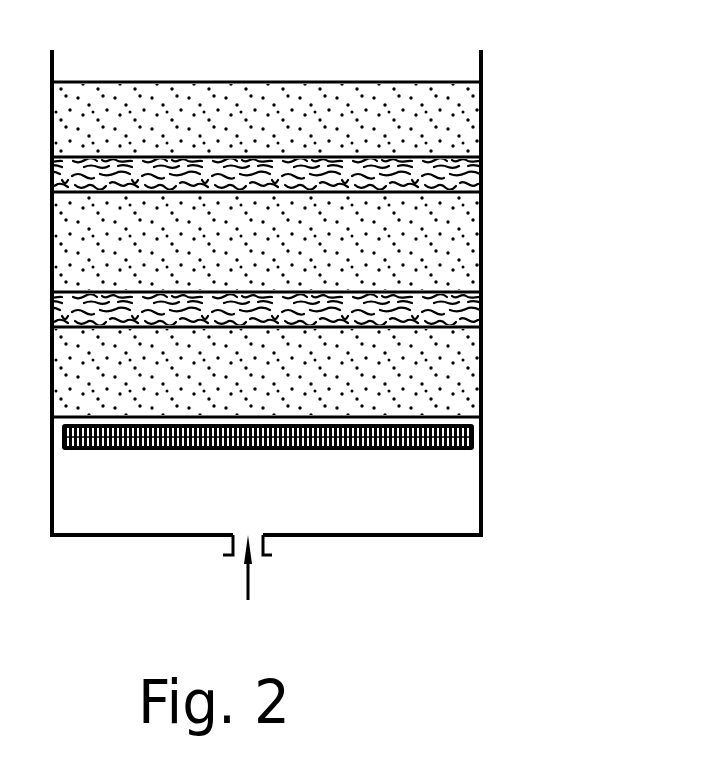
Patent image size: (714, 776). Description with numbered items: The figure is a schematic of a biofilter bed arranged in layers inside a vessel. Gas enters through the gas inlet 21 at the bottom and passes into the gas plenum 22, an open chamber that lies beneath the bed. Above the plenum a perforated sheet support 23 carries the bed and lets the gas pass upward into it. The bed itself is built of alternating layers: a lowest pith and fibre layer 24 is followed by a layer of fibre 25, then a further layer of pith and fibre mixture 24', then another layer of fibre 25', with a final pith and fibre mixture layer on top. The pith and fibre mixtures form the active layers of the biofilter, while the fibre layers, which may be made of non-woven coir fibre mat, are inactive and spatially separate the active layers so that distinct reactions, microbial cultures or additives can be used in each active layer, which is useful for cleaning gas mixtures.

The gas inlet 21 is at (255, 578).
The gas plenum 22 is at (418, 500).
The perforated sheet support 23 is at (476, 436).
The first catalyst bed layer 24 is at (315, 373).
The layer of pith and fibre mixture 24' is at (319, 243).
The layer of fibre 25 is at (308, 314).
The layer of fibre 25' is at (325, 186).